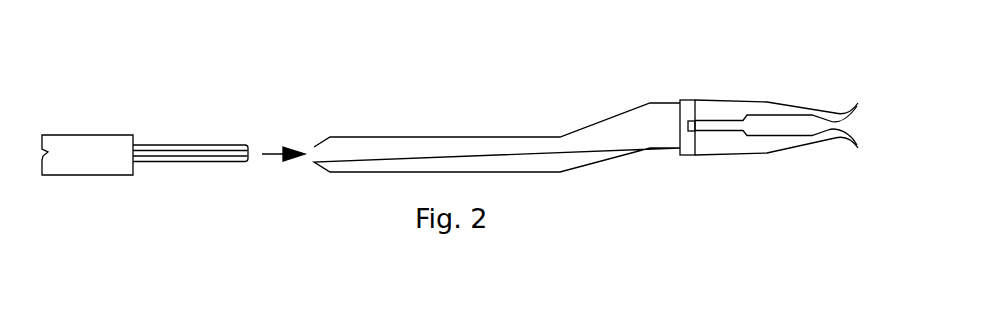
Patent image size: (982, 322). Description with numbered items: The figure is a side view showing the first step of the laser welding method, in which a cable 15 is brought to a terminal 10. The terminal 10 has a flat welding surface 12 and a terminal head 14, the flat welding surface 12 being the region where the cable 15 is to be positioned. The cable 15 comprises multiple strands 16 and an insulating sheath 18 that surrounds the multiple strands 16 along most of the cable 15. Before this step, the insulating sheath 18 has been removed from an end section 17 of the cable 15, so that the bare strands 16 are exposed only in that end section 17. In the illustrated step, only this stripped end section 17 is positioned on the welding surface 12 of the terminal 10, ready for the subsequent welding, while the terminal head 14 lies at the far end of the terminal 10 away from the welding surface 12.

The terminal 10 is at (586, 94).
The welding surface 12 is at (410, 137).
The terminal head 14 is at (732, 102).
The cable 15 is at (144, 174).
The strands 16 is at (217, 144).
The end section 17 is at (189, 148).
The insulating sheath 18 is at (77, 135).